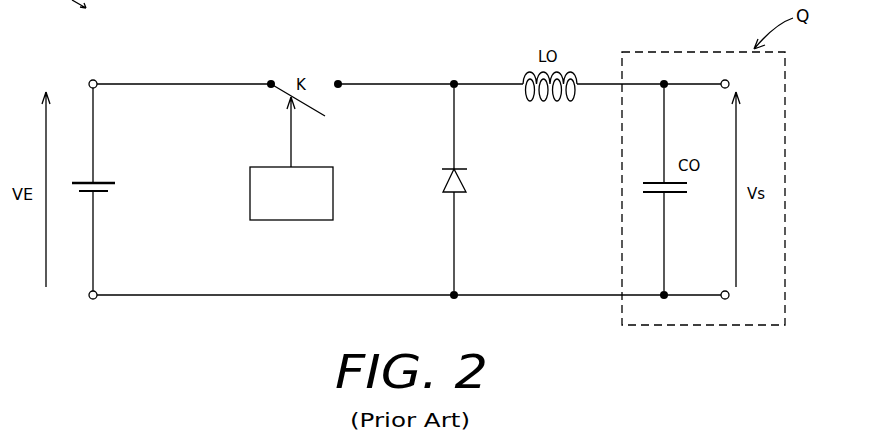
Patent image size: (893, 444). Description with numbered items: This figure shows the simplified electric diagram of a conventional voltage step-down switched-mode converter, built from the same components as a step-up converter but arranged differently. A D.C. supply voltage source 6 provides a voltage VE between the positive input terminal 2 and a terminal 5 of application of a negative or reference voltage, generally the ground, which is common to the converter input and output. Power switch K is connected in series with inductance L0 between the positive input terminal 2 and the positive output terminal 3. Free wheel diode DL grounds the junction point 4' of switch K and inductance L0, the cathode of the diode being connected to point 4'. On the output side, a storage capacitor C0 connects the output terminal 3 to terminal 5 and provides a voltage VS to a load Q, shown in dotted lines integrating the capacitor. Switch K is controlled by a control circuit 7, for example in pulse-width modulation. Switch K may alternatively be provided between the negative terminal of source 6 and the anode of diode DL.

The positive input terminal 2 is at (97, 79).
The positive output terminal 3 is at (722, 80).
The junction point 4' is at (452, 168).
The reference voltage terminal 5 is at (98, 291).
The D.C. supply voltage source 6 is at (103, 183).
The control circuit 7 is at (277, 221).